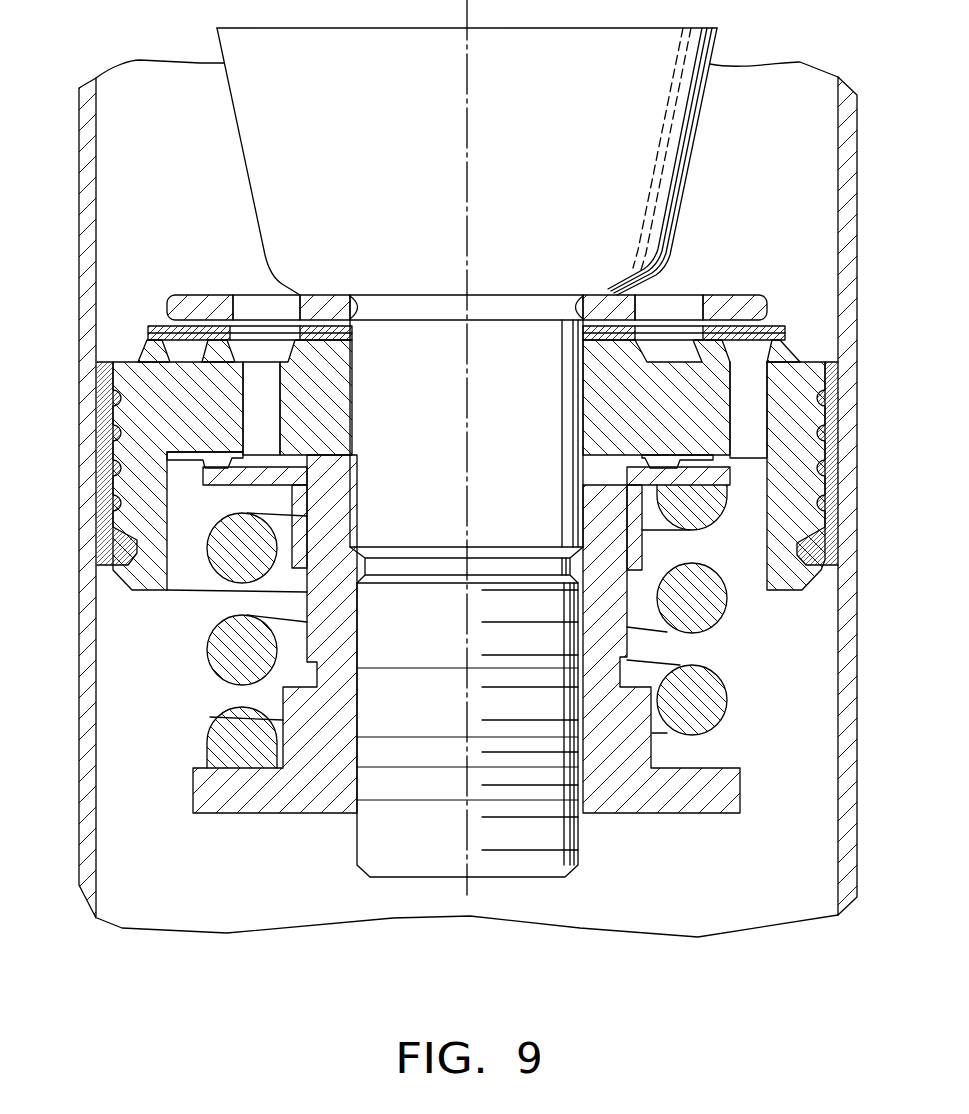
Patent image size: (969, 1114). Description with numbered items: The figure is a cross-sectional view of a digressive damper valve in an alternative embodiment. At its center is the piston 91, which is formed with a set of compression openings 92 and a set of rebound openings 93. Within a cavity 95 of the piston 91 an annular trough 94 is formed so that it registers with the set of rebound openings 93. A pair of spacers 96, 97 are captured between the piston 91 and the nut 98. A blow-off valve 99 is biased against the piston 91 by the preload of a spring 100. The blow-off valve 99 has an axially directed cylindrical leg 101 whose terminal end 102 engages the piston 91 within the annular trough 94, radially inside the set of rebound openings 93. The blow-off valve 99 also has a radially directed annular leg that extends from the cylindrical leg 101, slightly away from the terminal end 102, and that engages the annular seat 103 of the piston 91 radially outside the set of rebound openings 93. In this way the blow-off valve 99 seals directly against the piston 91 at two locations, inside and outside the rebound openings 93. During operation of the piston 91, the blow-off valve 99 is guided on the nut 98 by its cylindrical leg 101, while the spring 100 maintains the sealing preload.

The piston 91 is at (800, 358).
The compression openings 92 is at (762, 421).
The rebound openings 93 is at (250, 420).
The annular trough 94 is at (235, 458).
The cavity 95 is at (766, 570).
The spacer 96 is at (585, 480).
The spacer 97 is at (585, 473).
The nut 98 is at (635, 788).
The blow-off valve 99 is at (710, 487).
The spring 100 is at (700, 727).
The cylindrical leg 101 is at (633, 543).
The terminal end 102 is at (638, 450).
The annular seat 103 is at (722, 470).